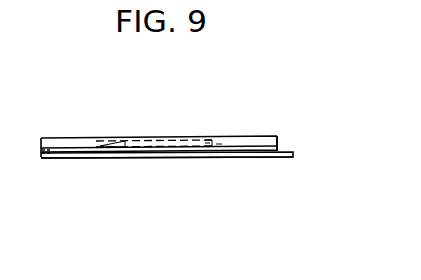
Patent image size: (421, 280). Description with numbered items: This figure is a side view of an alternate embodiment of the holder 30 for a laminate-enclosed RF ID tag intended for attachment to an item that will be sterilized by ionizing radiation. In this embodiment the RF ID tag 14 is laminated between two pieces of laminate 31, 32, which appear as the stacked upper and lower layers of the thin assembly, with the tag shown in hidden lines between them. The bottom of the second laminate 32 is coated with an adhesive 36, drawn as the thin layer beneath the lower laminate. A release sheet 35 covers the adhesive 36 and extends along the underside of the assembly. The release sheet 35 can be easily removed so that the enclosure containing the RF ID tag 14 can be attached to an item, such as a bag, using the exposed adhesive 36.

The laminate 31 is at (78, 137).
The second laminate 32 is at (63, 152).
The RF ID tag 14 is at (187, 138).
The release sheet 35 is at (283, 158).
The adhesive 36 is at (233, 157).
The holder 30 is at (278, 133).